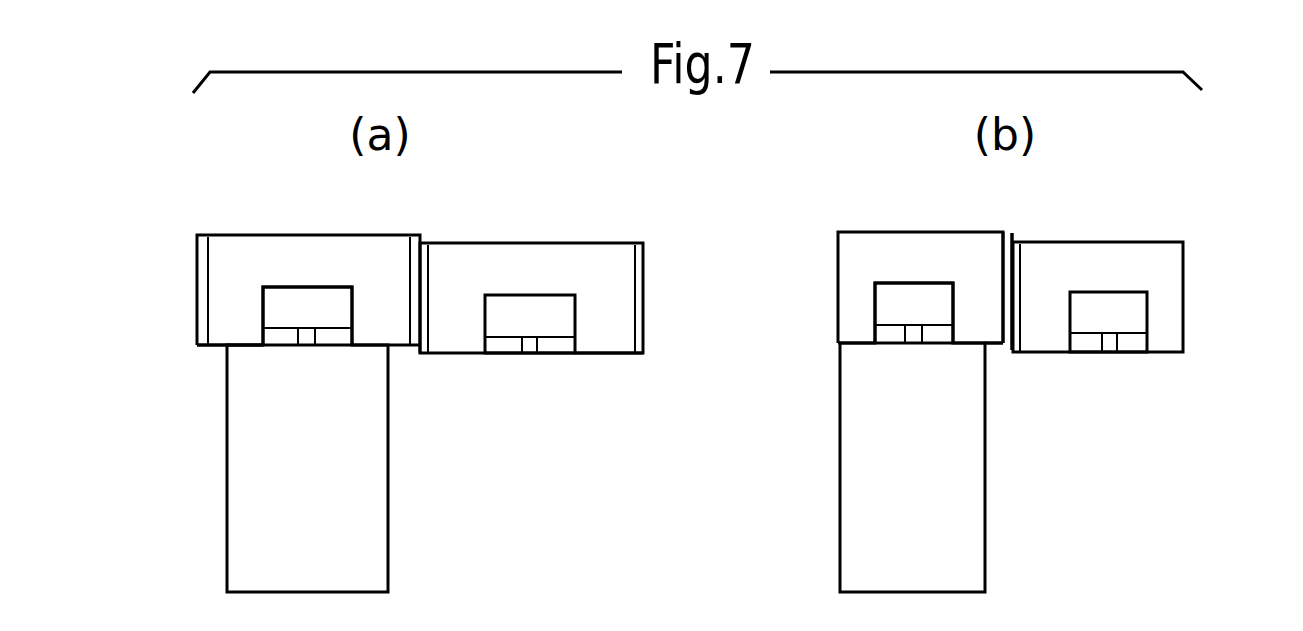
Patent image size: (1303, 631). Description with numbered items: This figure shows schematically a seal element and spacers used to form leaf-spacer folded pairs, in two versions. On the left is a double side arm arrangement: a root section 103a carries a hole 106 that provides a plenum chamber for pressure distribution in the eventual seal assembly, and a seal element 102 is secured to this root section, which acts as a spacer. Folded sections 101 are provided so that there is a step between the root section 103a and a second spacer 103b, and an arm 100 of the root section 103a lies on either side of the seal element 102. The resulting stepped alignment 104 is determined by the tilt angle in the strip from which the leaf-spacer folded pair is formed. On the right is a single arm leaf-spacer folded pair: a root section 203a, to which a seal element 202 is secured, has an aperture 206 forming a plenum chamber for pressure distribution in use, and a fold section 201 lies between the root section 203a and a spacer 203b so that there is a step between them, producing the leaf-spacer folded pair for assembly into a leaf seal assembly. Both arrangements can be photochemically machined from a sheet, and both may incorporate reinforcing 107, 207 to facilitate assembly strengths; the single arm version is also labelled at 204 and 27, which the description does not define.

The arm 100 is at (212, 228).
The folded sections 101 is at (418, 272).
The seal element 102 is at (352, 563).
The root section 103a is at (228, 347).
The spacer 103b is at (608, 343).
The stepped alignment 104 is at (426, 378).
The hole 106 is at (281, 307).
The reinforcing 107 is at (308, 347).
The fold section 201 is at (1005, 272).
The seal element 202 is at (960, 537).
The root section 203a is at (866, 255).
The spacer 203b is at (1165, 257).
The joint 204 is at (1003, 370).
The aperture 206 is at (905, 310).
The reinforcing 207 is at (914, 346).
The lead 27 is at (1110, 345).